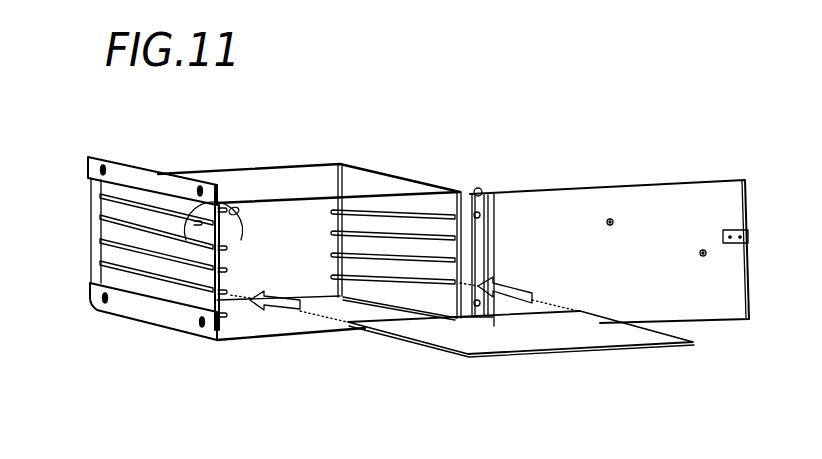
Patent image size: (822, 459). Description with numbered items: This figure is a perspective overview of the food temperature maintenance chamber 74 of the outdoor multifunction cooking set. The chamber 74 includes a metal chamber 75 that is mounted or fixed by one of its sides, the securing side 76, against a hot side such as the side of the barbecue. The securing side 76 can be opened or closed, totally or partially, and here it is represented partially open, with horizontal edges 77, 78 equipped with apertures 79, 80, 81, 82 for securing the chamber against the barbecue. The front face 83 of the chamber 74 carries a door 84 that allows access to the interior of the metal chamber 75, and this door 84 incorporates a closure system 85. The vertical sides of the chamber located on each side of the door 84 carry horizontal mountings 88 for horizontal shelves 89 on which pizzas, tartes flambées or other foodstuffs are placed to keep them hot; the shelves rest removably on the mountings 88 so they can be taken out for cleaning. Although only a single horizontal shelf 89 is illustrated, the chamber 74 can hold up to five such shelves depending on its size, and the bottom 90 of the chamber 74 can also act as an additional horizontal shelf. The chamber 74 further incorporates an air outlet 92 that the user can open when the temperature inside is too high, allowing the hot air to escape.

The temperature maintenance chamber 74 is at (502, 131).
The metal chamber 75 is at (287, 172).
The securing side 76 is at (150, 313).
The horizontal edge 77 is at (177, 318).
The horizontal edge 78 is at (143, 180).
The aperture 79 is at (103, 164).
The aperture 80 is at (200, 184).
The aperture 81 is at (92, 312).
The aperture 82 is at (202, 330).
The front face 83 is at (325, 312).
The door 84 is at (637, 203).
The closure system 85 is at (752, 232).
The horizontal mountings 88 is at (345, 203).
The horizontal shelf 89 is at (537, 353).
The bottom 90 is at (252, 323).
The air outlet 92 is at (268, 194).